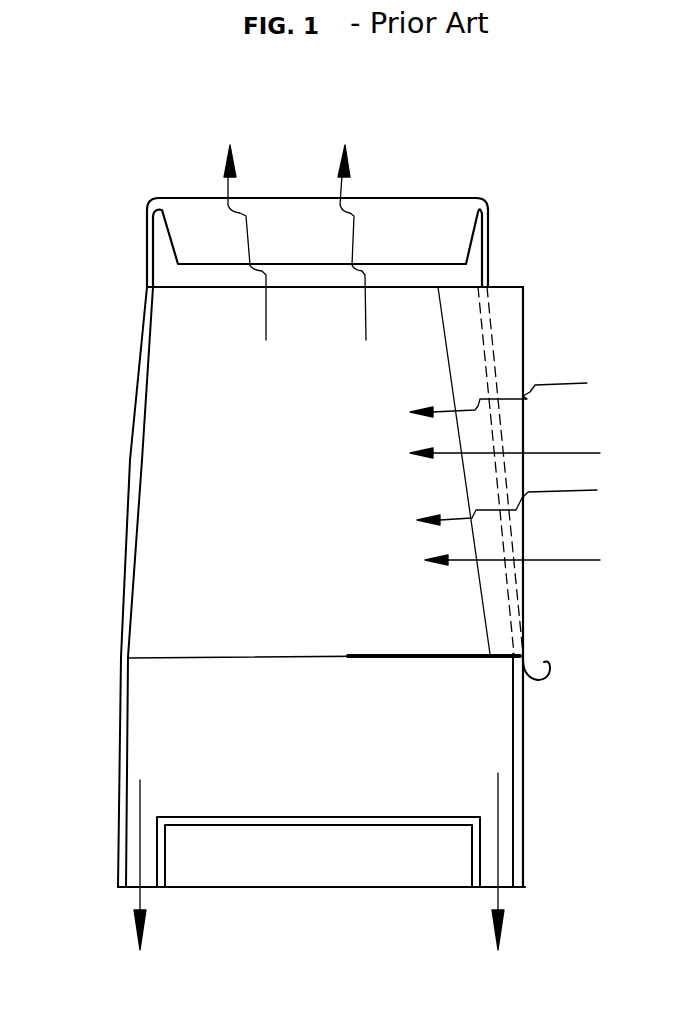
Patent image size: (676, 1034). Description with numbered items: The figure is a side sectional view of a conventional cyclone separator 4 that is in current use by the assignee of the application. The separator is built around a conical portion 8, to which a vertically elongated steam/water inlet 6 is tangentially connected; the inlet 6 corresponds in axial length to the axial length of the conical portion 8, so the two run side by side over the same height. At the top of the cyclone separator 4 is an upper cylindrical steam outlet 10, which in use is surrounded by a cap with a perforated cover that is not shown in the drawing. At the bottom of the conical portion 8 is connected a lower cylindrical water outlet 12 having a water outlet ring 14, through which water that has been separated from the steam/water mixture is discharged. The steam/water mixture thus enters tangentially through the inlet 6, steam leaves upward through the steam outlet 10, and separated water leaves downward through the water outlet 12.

The cyclone separator 4 is at (525, 188).
The steam/water inlet 6 is at (508, 328).
The conical portion 8 is at (125, 530).
The upper cylindrical steam outlet 10 is at (186, 226).
The lower cylindrical water outlet 12 is at (523, 726).
The water outlet ring 14 is at (130, 867).